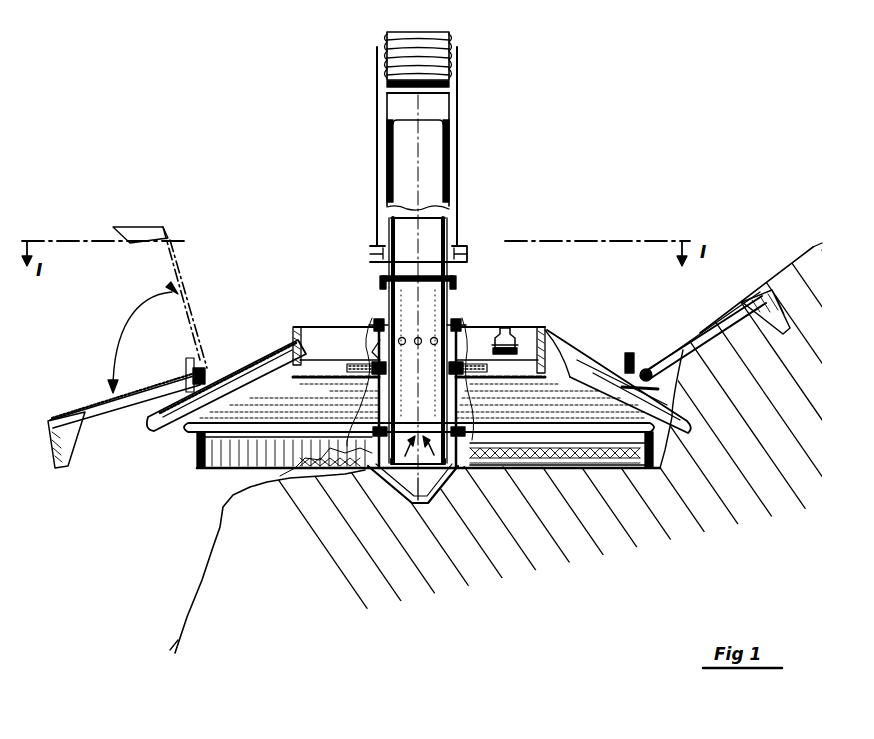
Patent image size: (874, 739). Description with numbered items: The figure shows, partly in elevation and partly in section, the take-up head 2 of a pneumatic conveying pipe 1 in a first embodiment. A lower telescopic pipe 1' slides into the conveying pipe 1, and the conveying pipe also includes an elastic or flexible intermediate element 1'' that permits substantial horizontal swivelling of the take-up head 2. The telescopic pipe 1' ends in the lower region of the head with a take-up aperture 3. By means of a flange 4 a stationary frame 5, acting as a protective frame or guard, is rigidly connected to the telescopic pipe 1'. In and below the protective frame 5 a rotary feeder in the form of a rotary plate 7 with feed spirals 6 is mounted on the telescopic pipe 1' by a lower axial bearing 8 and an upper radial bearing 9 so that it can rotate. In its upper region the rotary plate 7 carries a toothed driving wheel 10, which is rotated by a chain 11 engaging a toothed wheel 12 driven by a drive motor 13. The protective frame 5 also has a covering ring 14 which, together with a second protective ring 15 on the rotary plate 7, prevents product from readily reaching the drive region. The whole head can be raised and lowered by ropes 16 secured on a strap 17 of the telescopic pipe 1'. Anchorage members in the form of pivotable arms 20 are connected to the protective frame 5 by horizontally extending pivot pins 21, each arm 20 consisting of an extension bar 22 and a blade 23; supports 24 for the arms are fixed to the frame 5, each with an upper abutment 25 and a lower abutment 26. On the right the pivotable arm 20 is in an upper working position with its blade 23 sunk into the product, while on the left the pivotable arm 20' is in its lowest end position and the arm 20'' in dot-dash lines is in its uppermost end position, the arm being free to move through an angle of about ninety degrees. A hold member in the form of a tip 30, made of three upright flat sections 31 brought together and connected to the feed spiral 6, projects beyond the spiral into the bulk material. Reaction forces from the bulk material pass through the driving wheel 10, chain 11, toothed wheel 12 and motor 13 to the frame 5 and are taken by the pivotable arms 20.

The pneumatic conveying pipe 1 is at (435, 151).
The telescopic pipe 1' is at (435, 286).
The intermediate element 1'' is at (440, 59).
The take-up head 2 is at (200, 443).
The take-up aperture 3 is at (432, 497).
The flange 4 is at (461, 322).
The frame 5 is at (286, 341).
The feed spirals 6 is at (607, 475).
The rotary plate 7 is at (637, 472).
The lower axial bearing 8 is at (470, 470).
The upper radial bearing 9 is at (507, 472).
The toothed driving wheel 10 is at (378, 352).
The chain 11 is at (492, 345).
The toothed wheel 12 is at (507, 368).
The drive motor 13 is at (515, 347).
The covering ring 14 is at (288, 366).
The second protective ring 15 is at (303, 365).
The ropes 16 is at (458, 121).
The strap 17 is at (379, 250).
The pivotable arm 20 is at (662, 341).
The pivotable arm in lowest end position 20' is at (124, 413).
The pivotable arm in uppermost end position 20'' is at (163, 303).
The pivot pin 21 is at (648, 366).
The extension bar 22 is at (735, 306).
The blade 23 is at (776, 312).
The supports 24 is at (640, 377).
The upper abutment 25 is at (630, 353).
The lower abutment 26 is at (645, 382).
The tip 30 is at (405, 512).
The upright flat sections 31 is at (438, 507).